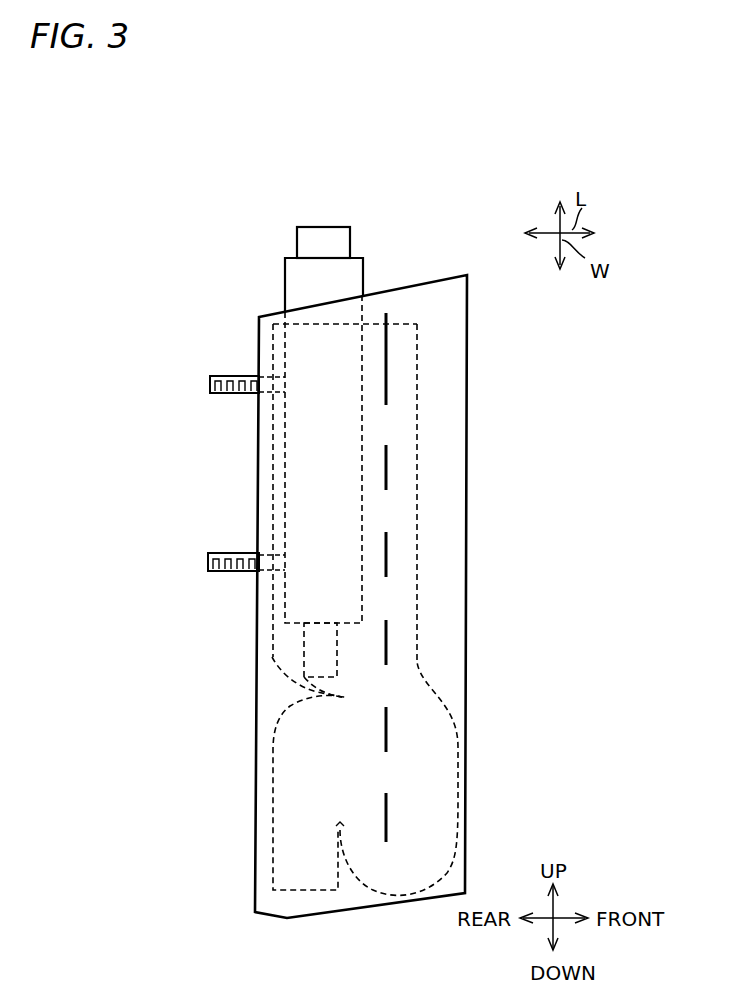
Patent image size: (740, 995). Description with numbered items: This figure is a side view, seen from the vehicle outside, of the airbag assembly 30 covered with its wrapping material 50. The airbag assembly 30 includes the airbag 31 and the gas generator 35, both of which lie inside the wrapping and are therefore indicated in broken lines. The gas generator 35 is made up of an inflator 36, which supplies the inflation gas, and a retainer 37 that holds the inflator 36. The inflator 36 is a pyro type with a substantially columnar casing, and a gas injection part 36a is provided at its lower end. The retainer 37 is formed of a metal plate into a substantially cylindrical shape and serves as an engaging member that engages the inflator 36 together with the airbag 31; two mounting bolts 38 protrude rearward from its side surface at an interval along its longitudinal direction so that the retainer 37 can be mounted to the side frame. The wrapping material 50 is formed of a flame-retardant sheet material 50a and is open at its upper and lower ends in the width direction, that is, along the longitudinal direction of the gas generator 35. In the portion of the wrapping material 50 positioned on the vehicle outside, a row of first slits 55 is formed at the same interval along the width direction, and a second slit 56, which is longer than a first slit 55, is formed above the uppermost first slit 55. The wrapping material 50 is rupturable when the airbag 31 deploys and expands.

The airbag assembly 30 is at (410, 300).
The airbag 31 is at (272, 655).
The gas generator 35 is at (215, 215).
The inflator 36 is at (300, 224).
The gas injection part 36a is at (300, 698).
The retainer 37 is at (285, 276).
The mounting bolts 38 is at (222, 376).
The wrapping material 50 is at (468, 262).
The flame-retardant sheet material 50a is at (457, 545).
The first slit 55 is at (386, 470).
The second slit 56 is at (386, 360).